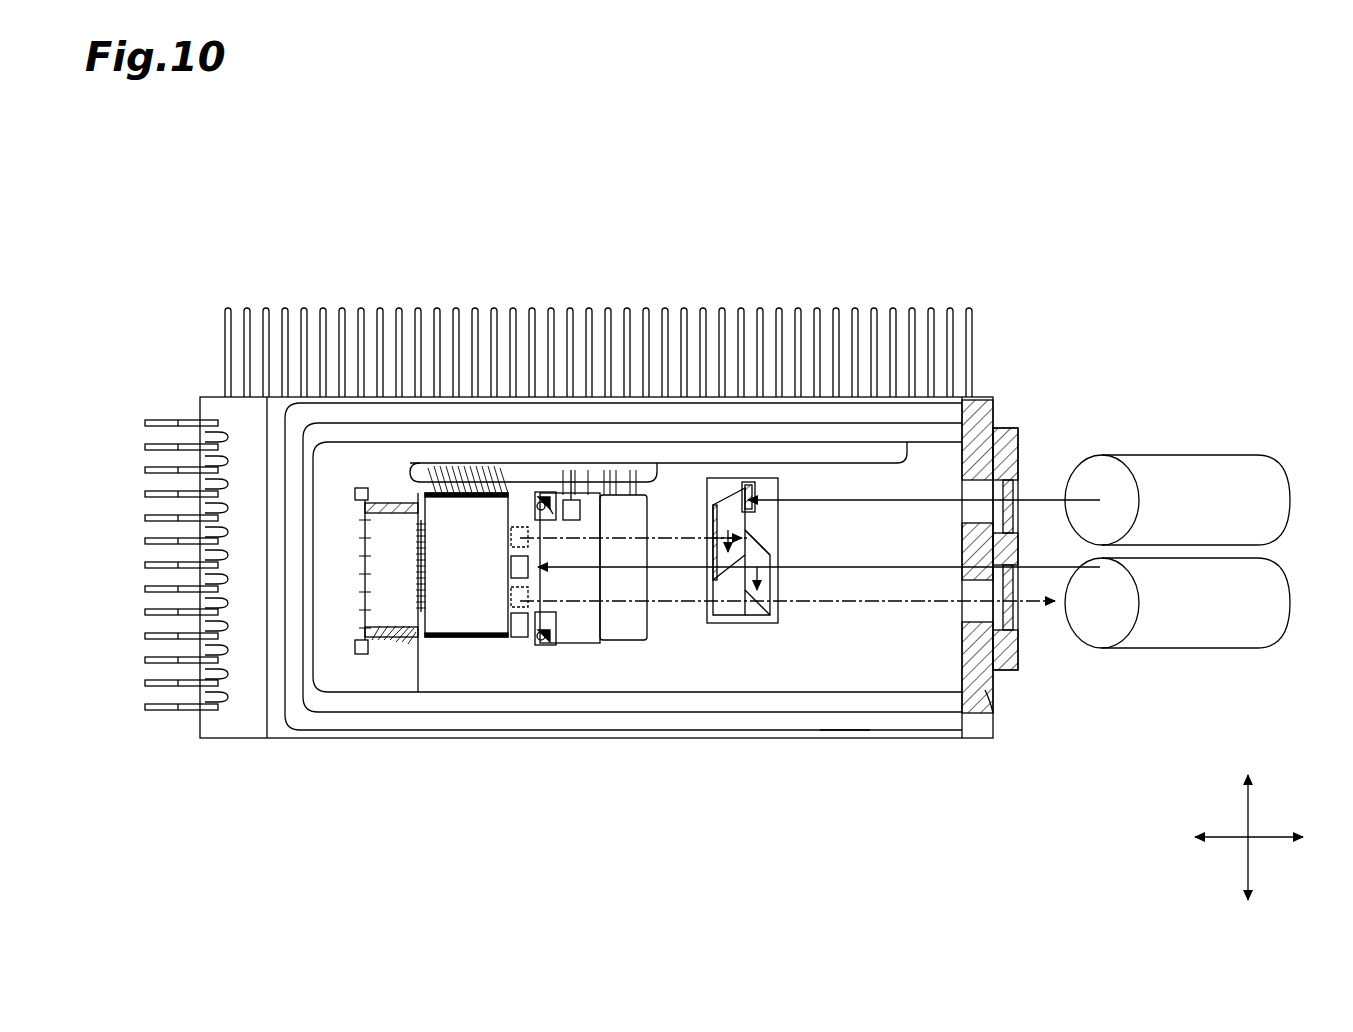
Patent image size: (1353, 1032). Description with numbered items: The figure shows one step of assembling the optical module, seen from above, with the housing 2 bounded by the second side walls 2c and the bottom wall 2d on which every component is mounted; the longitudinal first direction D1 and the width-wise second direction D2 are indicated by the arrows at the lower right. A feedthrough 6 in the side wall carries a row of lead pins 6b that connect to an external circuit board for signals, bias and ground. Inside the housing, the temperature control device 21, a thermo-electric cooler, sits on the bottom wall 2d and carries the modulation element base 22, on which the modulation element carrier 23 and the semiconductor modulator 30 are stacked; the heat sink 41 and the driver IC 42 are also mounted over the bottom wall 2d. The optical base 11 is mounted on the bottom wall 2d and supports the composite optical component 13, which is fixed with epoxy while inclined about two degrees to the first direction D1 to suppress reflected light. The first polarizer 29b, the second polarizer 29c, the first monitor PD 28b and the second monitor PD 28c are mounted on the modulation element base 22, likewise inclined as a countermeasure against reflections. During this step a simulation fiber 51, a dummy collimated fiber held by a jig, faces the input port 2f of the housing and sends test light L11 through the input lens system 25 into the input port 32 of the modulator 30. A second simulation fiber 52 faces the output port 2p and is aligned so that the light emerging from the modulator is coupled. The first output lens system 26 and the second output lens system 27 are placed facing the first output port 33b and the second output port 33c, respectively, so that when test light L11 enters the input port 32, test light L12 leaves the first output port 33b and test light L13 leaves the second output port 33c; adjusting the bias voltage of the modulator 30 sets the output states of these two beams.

The housing 2 is at (988, 390).
The second side wall 2c is at (990, 690).
The bottom wall 2d is at (840, 673).
The input port 2f is at (1010, 468).
The output port 2p is at (1012, 635).
The feedthrough 6 is at (276, 392).
The lead pin 6b is at (398, 312).
The optical base 11 is at (770, 625).
The composite optical component 13 is at (725, 495).
The temperature control device 21 is at (627, 632).
The modulation element base 22 is at (577, 632).
The modulation element carrier 23 is at (492, 642).
The input lens system 25 is at (508, 540).
The first output lens system 26 is at (497, 648).
The second output lens system 27 is at (540, 492).
The first monitor PD 28b is at (538, 640).
The second monitor PD 28c is at (535, 500).
The first polarizer 29b is at (520, 634).
The second polarizer 29c is at (521, 493).
The modulator 30 is at (468, 640).
The input port 32 is at (510, 566).
The first output port 33b is at (510, 595).
The second output port 33c is at (460, 470).
The heat sink 41 is at (410, 643).
The driver IC 42 is at (385, 603).
The simulation fiber 51 is at (1150, 470).
The simulation fiber 52 is at (1200, 628).
The test light L11 is at (883, 505).
The test light L12 is at (676, 610).
The test light L13 is at (672, 530).
The first direction D1 is at (1222, 840).
The second direction D2 is at (1250, 860).